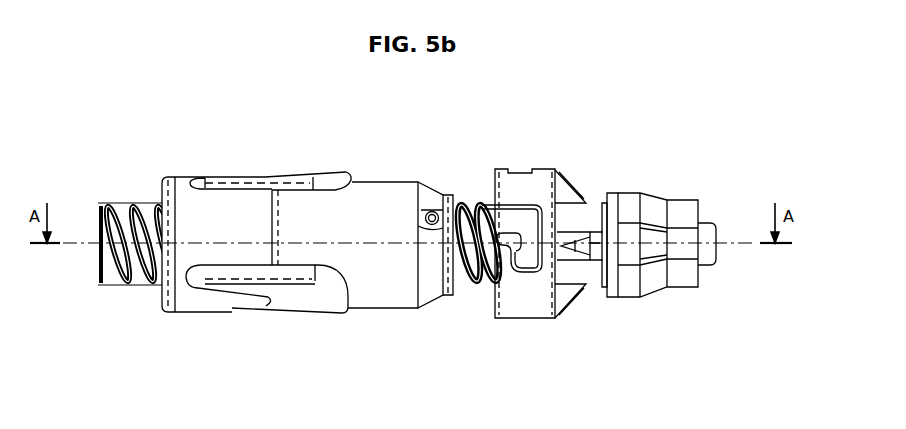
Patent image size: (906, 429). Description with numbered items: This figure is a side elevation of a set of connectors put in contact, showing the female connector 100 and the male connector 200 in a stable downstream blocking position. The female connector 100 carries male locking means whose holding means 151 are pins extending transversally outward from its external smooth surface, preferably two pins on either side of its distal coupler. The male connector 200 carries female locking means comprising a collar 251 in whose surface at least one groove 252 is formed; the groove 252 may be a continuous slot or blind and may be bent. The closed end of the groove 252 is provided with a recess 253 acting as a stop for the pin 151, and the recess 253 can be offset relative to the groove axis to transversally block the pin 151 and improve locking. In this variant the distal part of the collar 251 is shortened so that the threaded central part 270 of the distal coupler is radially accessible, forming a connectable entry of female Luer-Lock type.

The female connector 100 is at (293, 148).
The holding means 151 is at (410, 222).
The central part of the distal coupler 270 is at (472, 200).
The male connector 200 is at (546, 142).
The collar 251 is at (517, 305).
The groove 252 is at (517, 224).
The recess 253 is at (527, 264).